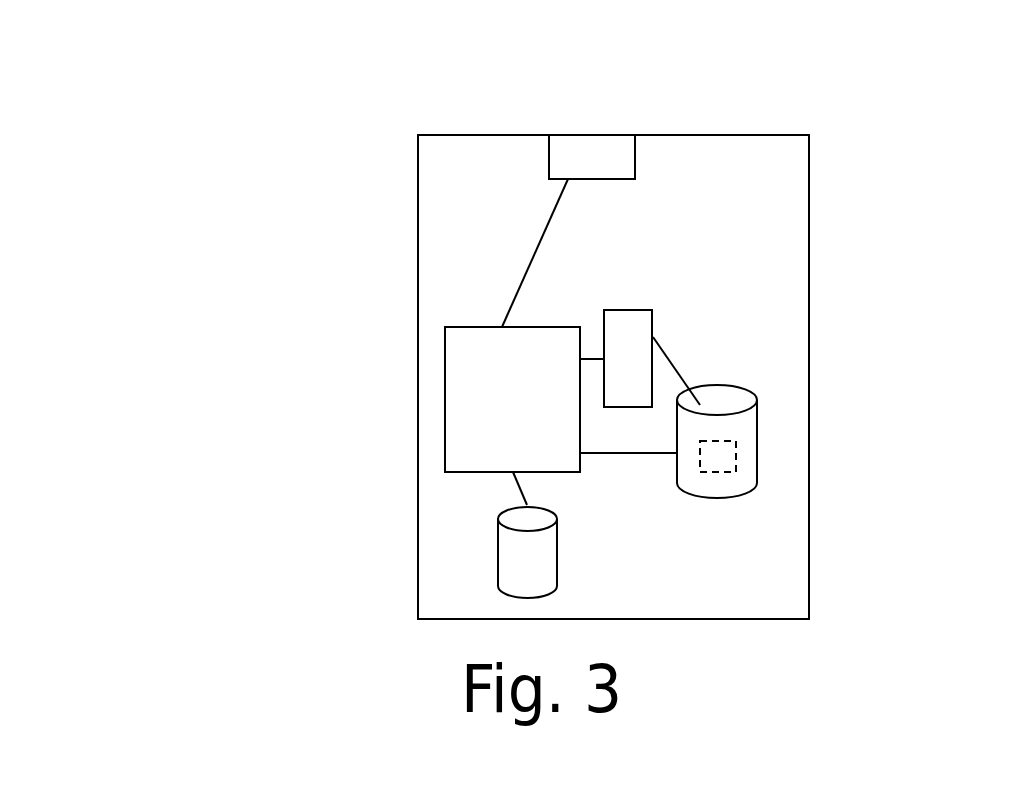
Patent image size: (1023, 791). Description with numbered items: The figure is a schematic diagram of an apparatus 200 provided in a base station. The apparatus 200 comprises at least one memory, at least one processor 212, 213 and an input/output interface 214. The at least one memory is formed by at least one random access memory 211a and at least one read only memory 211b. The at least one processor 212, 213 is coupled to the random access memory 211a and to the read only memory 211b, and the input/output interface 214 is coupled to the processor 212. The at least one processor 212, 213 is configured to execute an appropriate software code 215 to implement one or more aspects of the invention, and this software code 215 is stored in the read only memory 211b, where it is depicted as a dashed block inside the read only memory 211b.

The apparatus 200 is at (398, 127).
The input/output interface 214 is at (598, 158).
The processor 213 is at (617, 333).
The processor 212 is at (445, 428).
The random access memory 211a is at (498, 551).
The read only memory 211b is at (757, 468).
The software code 215 is at (733, 446).